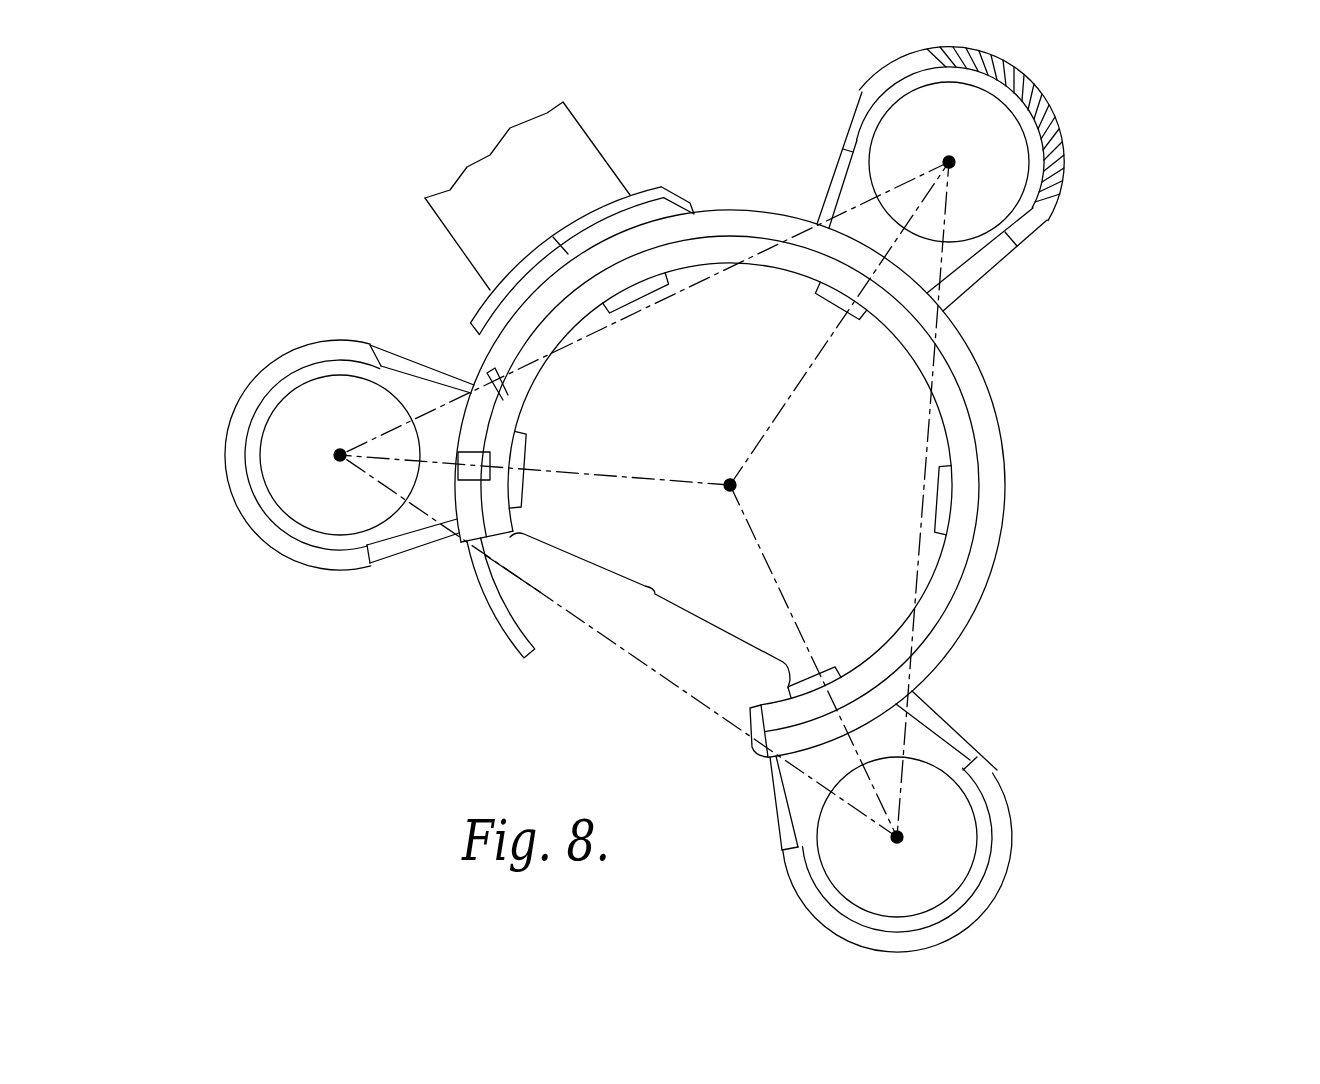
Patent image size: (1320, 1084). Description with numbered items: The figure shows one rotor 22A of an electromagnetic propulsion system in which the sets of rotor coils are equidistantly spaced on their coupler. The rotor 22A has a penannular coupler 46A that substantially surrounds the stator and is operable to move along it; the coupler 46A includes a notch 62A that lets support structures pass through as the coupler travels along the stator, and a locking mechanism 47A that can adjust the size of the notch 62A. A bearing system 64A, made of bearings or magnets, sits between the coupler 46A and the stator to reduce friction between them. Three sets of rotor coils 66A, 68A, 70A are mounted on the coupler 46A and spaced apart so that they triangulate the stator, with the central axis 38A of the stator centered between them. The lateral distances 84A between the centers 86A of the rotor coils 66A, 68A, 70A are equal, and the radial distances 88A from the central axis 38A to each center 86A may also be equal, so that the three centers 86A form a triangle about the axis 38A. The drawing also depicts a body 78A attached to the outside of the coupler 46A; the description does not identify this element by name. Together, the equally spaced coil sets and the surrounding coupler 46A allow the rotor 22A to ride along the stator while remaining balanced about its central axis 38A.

The rotor 22A is at (1140, 437).
The central axis 38A is at (738, 484).
The coupler 46A is at (990, 520).
The locking mechanism 47A is at (470, 482).
The notch 62A is at (655, 590).
The bearing system 64A is at (645, 286).
The set of rotor coils 66A is at (262, 522).
The set of rotor coils 68A is at (1048, 128).
The set of rotor coils 70A is at (1000, 815).
The block 78A is at (564, 130).
The lateral distance 84A is at (722, 275).
The center 86A is at (949, 162).
The radial distance 88A is at (763, 398).